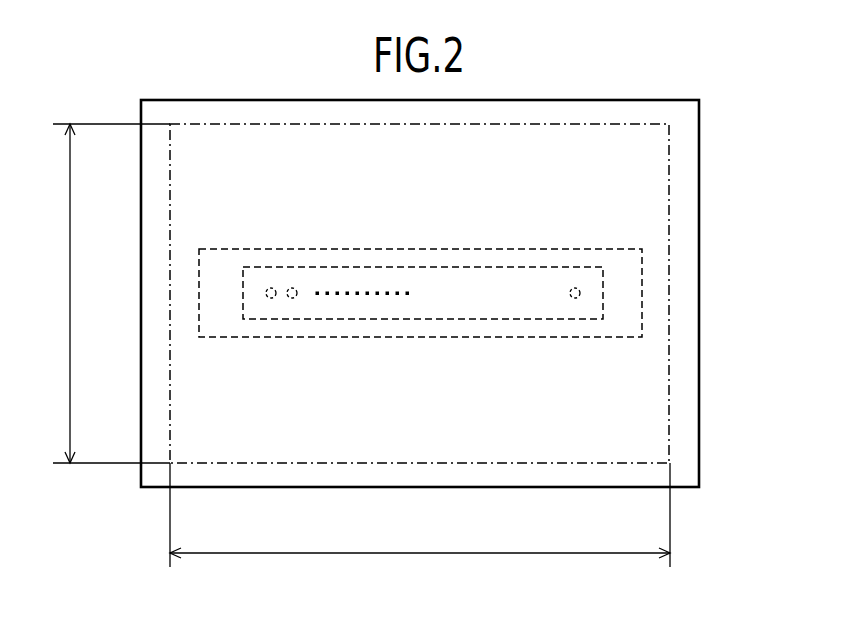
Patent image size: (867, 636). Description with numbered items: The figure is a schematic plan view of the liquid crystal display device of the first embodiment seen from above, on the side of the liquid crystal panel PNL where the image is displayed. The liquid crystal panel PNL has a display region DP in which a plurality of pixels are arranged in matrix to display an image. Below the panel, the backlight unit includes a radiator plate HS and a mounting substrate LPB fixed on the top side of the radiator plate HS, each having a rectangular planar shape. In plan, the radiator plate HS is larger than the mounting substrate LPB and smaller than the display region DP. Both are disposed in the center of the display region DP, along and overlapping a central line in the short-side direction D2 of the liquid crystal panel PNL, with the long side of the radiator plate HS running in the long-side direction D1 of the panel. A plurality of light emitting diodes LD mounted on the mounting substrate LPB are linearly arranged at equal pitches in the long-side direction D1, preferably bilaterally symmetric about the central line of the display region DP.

The liquid crystal panel PNL is at (699, 187).
The display region DP is at (669, 243).
The radiator plate HS is at (463, 338).
The mounting substrate LPB is at (487, 266).
The light emitting diodes LD is at (292, 288).
The long-side direction D1 is at (420, 523).
The short-side direction D2 is at (102, 293).